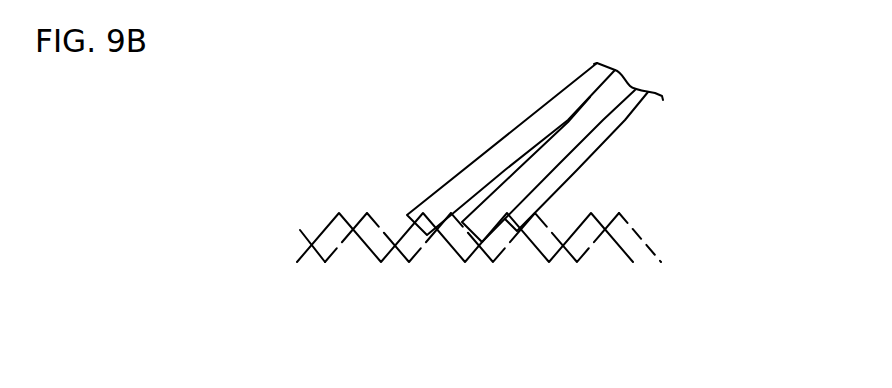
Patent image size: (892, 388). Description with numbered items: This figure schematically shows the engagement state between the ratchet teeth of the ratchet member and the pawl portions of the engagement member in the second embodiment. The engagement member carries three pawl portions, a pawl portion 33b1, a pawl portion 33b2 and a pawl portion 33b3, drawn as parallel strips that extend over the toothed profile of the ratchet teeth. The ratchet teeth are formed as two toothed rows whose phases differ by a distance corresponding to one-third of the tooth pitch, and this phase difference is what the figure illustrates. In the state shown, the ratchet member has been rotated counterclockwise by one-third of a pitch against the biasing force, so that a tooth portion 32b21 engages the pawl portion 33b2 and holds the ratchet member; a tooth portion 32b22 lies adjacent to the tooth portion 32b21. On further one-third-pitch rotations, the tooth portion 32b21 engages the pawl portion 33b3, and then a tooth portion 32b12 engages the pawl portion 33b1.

The pawl portion 33b1 is at (550, 153).
The pawl portion 33b2 is at (538, 202).
The pawl portion 33b3 is at (466, 170).
The tooth portion 32b12 is at (498, 240).
The tooth portion 32b21 is at (456, 237).
The tooth portion 32b22 is at (475, 271).